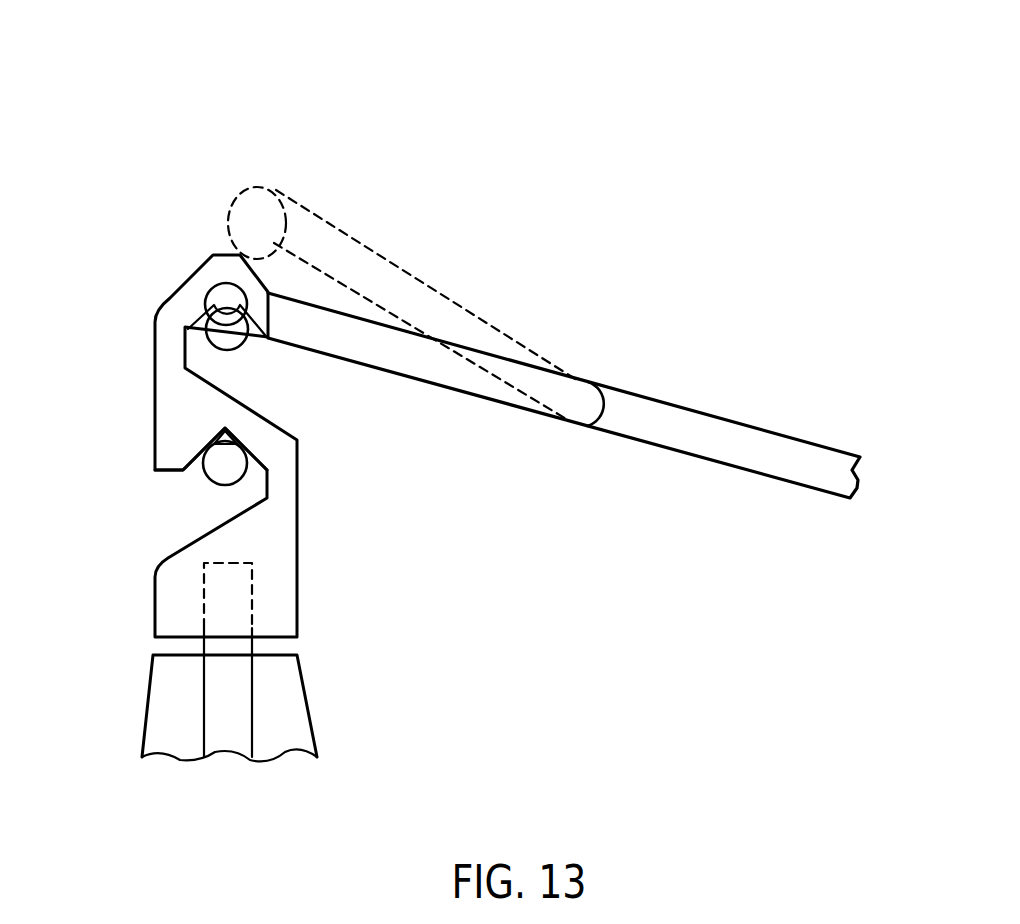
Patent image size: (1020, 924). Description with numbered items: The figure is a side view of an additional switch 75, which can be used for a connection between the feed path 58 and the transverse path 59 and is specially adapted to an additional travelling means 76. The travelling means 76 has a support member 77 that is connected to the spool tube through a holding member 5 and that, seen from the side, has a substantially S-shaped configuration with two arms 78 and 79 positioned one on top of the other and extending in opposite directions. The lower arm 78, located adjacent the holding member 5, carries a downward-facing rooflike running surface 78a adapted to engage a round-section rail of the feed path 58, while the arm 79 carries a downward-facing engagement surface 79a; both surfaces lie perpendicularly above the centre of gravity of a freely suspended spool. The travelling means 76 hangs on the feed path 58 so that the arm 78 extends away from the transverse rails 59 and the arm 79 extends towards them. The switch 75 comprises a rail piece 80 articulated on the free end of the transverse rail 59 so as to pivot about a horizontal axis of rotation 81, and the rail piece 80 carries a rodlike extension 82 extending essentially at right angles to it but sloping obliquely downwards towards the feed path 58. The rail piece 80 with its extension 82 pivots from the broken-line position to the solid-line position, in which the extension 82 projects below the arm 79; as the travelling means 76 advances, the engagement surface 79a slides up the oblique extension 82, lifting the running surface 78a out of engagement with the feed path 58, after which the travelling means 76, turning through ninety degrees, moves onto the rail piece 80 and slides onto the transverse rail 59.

The holding member 5 is at (270, 692).
The feed path 58 is at (230, 463).
The transverse path 59 is at (717, 434).
The additional switch 75 is at (453, 222).
The travelling means 76 is at (330, 542).
The support member 77 is at (278, 492).
The lower arm 78 is at (212, 423).
The rooflike running surface 78a is at (283, 425).
The arm 79 is at (213, 254).
The engagement surface 79a is at (171, 299).
The rail piece 80 is at (483, 322).
The axis of rotation 81 is at (592, 381).
The rodlike extension 82 is at (252, 243).